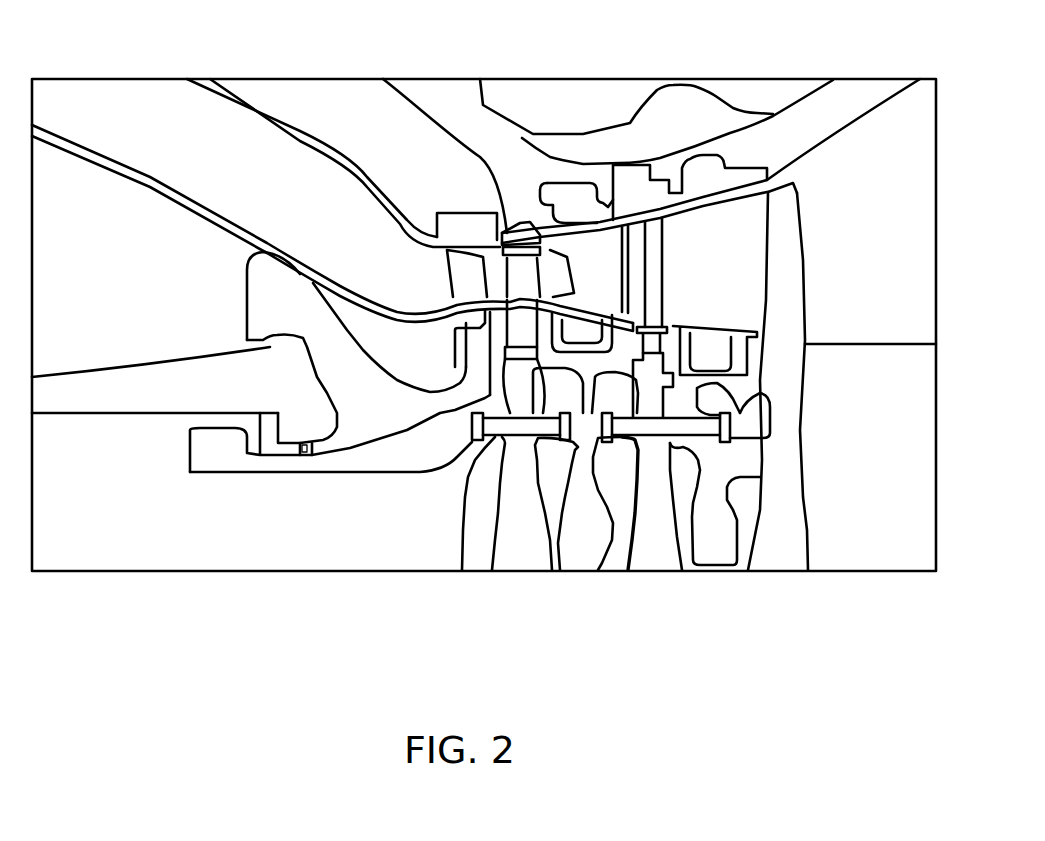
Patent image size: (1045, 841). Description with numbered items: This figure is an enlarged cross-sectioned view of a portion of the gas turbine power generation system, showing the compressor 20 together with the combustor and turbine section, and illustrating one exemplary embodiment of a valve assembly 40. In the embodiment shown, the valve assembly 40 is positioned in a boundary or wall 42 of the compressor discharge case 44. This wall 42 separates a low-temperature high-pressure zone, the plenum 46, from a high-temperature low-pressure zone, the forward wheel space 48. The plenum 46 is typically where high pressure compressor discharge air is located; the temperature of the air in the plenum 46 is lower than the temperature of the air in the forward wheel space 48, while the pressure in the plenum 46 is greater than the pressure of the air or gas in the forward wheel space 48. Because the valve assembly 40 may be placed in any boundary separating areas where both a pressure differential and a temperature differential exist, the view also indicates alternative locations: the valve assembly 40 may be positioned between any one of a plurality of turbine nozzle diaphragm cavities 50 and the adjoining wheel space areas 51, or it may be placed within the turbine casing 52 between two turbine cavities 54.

The compressor 20 is at (648, 649).
The valve assembly 40 is at (303, 460).
The wall 42 is at (277, 457).
The compressor discharge case 44 is at (270, 403).
The plenum 46 is at (203, 390).
The forward wheel space 48 is at (500, 398).
The turbine nozzle diaphragm cavities 50 is at (717, 343).
The wheel space areas 51 is at (753, 357).
The turbine casing 52 is at (503, 180).
The turbine cavities 54 is at (530, 207).